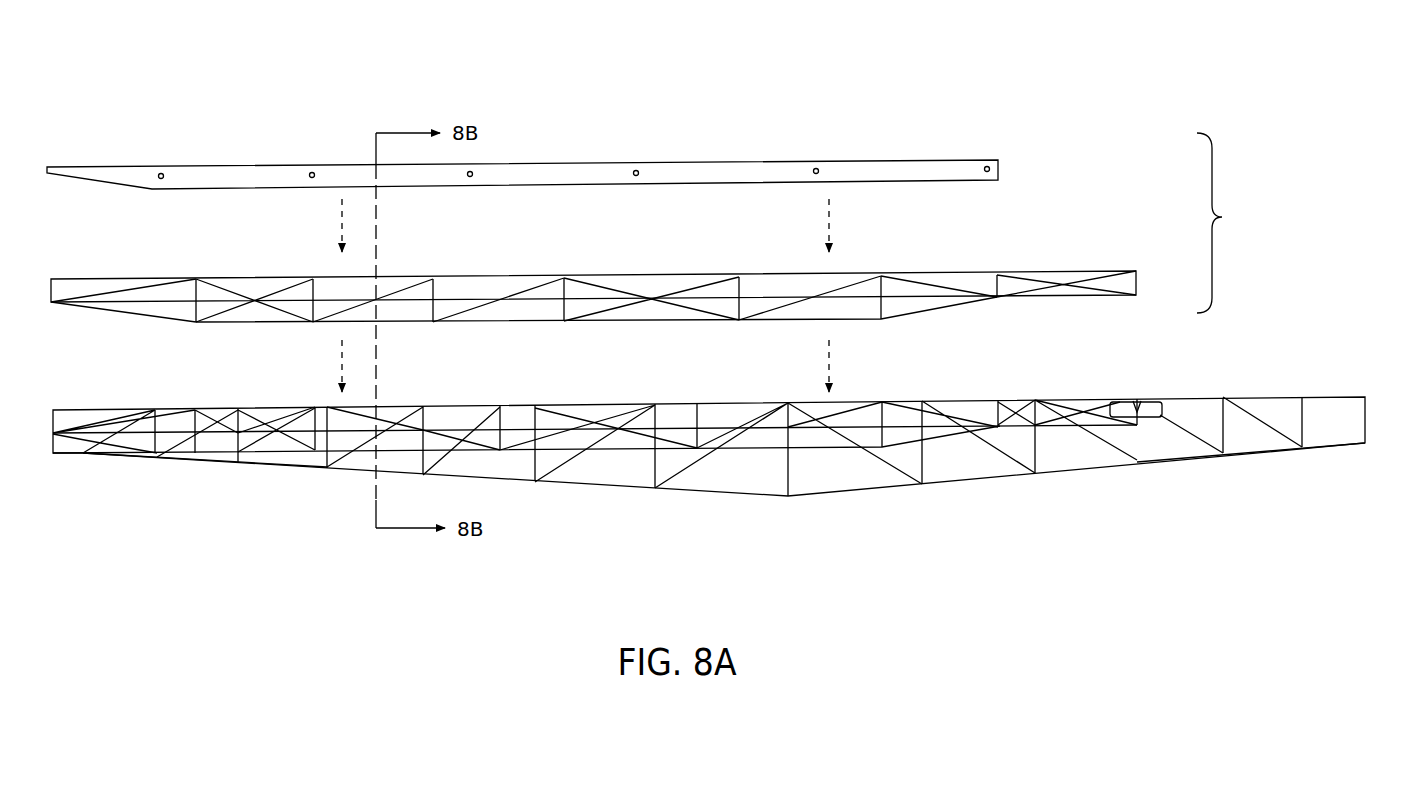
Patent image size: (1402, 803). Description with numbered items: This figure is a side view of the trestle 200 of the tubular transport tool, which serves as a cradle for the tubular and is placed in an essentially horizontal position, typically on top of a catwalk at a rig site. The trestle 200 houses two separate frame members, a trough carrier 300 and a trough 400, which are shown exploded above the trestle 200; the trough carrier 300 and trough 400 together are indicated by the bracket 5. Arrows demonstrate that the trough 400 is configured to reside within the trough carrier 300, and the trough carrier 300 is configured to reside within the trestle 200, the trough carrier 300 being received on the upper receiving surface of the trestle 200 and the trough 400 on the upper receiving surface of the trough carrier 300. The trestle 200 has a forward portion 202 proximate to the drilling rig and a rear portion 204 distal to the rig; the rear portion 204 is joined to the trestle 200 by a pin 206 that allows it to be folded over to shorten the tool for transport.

The stiffened panel assembly 5 is at (1220, 223).
The trestle 200 is at (709, 396).
The forward portion 202 is at (122, 462).
The rear portion 204 is at (1208, 455).
The pin 206 is at (1123, 403).
The trough carrier 300 is at (1063, 252).
The trough 400 is at (945, 140).